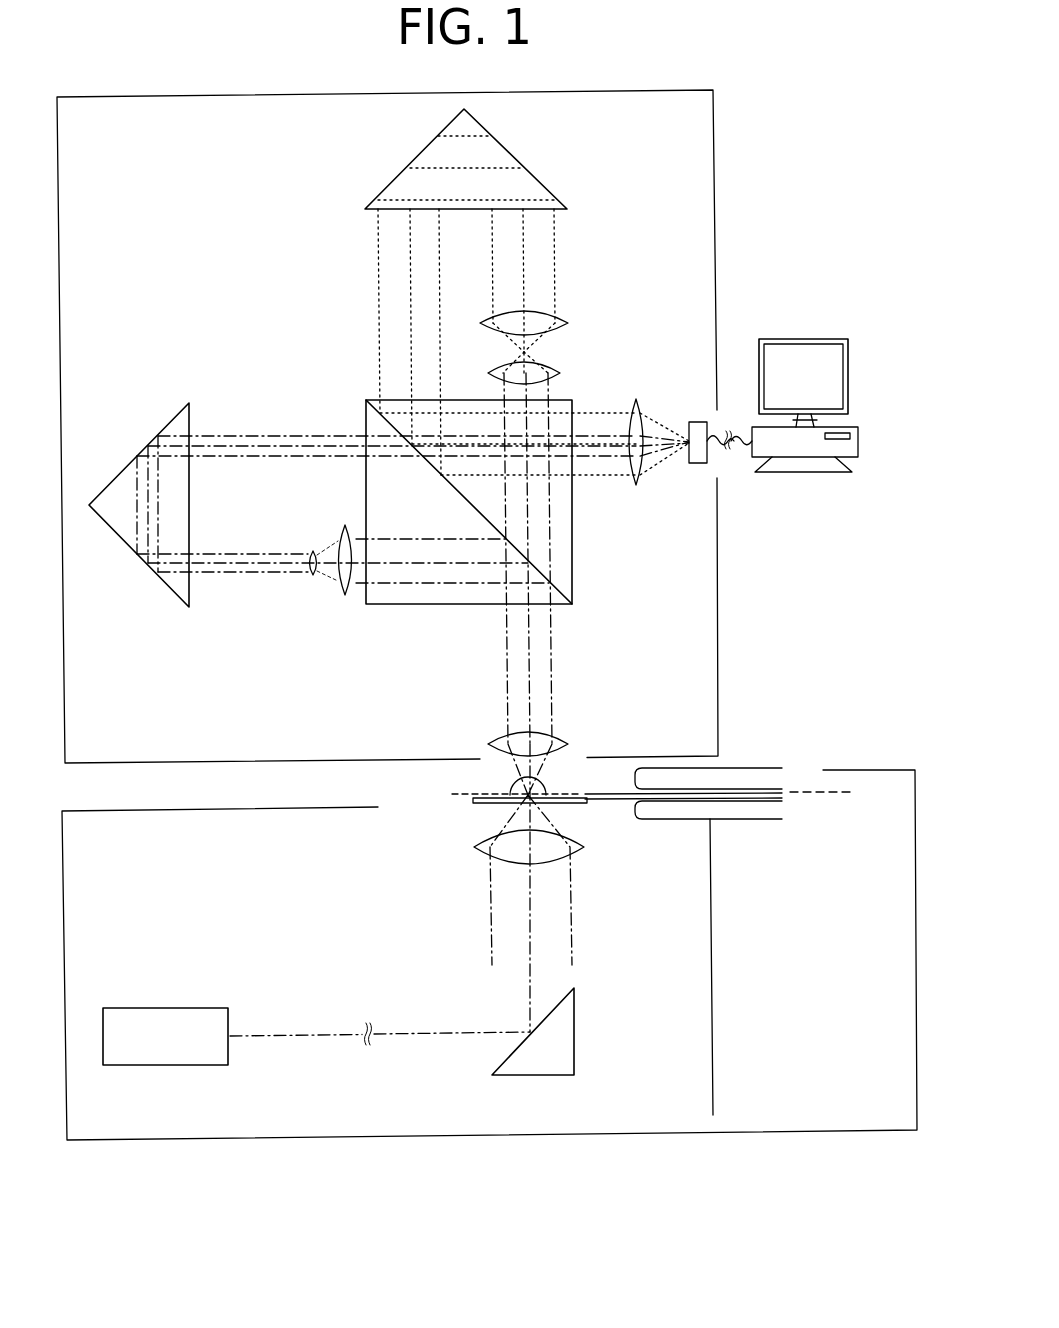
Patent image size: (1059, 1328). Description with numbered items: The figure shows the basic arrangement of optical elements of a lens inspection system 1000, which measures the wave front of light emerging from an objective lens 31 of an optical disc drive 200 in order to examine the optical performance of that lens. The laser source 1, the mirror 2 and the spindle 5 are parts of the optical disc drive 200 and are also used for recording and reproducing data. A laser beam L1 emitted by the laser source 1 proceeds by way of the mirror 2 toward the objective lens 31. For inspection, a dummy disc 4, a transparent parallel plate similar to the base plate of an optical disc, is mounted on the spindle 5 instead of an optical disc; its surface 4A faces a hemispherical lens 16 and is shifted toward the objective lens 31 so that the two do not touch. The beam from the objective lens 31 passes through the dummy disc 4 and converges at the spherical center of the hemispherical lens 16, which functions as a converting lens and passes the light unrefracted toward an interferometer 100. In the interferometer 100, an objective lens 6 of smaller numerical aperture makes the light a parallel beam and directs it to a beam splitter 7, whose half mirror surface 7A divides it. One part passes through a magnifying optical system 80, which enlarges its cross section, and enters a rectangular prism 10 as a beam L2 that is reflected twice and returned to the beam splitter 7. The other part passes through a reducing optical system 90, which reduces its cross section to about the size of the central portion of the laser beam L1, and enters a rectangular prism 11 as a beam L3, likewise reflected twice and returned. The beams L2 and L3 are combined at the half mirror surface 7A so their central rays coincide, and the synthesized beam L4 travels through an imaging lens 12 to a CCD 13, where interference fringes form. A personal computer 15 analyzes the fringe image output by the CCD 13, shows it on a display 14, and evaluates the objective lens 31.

The lens inspection system 1000 is at (774, 196).
The interferometer 100 is at (692, 612).
The optical disc drive 200 is at (597, 1128).
The laser source 1 is at (183, 1013).
The mirror 2 is at (570, 1060).
The objective lens 31 is at (482, 851).
The dummy disc 4 is at (491, 812).
The sample surface 4A is at (483, 805).
The spindle 5 is at (752, 892).
The objective lens 6 is at (560, 742).
The hemispherical lens 16 is at (541, 785).
The beam splitter 7 is at (500, 504).
The half mirror surface 7A is at (562, 592).
The magnifying optical system 80 is at (573, 300).
The rectangular prism 10 is at (538, 190).
The rectangular prism 11 is at (183, 420).
The reducing optical system 90 is at (359, 600).
The imaging lens 12 is at (637, 484).
The CCD 13 is at (700, 463).
The display 14 is at (782, 404).
The personal computer 15 is at (852, 466).
The laser beam L1 is at (380, 1047).
The beam L2 is at (478, 342).
The beam L3 is at (343, 568).
The synthesized beam L4 is at (413, 458).